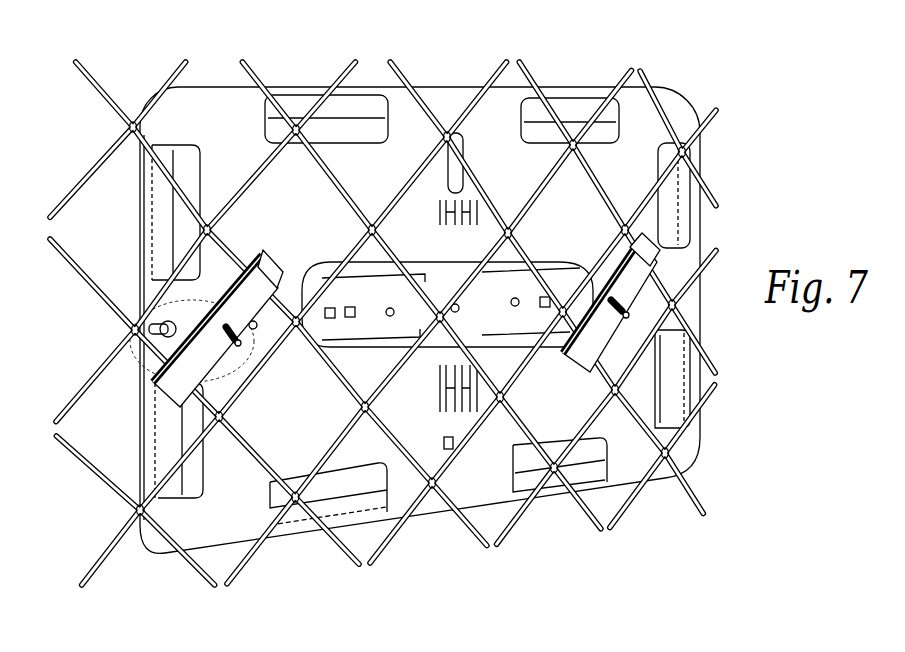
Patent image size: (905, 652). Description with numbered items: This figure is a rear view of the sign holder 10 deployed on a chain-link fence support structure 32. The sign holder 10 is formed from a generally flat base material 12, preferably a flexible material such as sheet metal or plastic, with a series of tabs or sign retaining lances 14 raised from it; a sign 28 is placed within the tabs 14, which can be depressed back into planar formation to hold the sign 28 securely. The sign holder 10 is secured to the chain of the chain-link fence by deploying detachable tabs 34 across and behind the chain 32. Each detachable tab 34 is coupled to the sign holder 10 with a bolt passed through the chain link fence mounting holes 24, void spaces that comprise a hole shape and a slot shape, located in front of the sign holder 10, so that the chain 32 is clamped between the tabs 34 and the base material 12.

The sign holder 10 is at (748, 242).
The base material 12 is at (643, 128).
The sign retaining lances 14 is at (340, 105).
The chain link fence mounting holes 24 is at (152, 378).
The sign 28 is at (667, 398).
The chain-link fence support structure 32 is at (107, 162).
The detachable tabs 34 is at (150, 312).